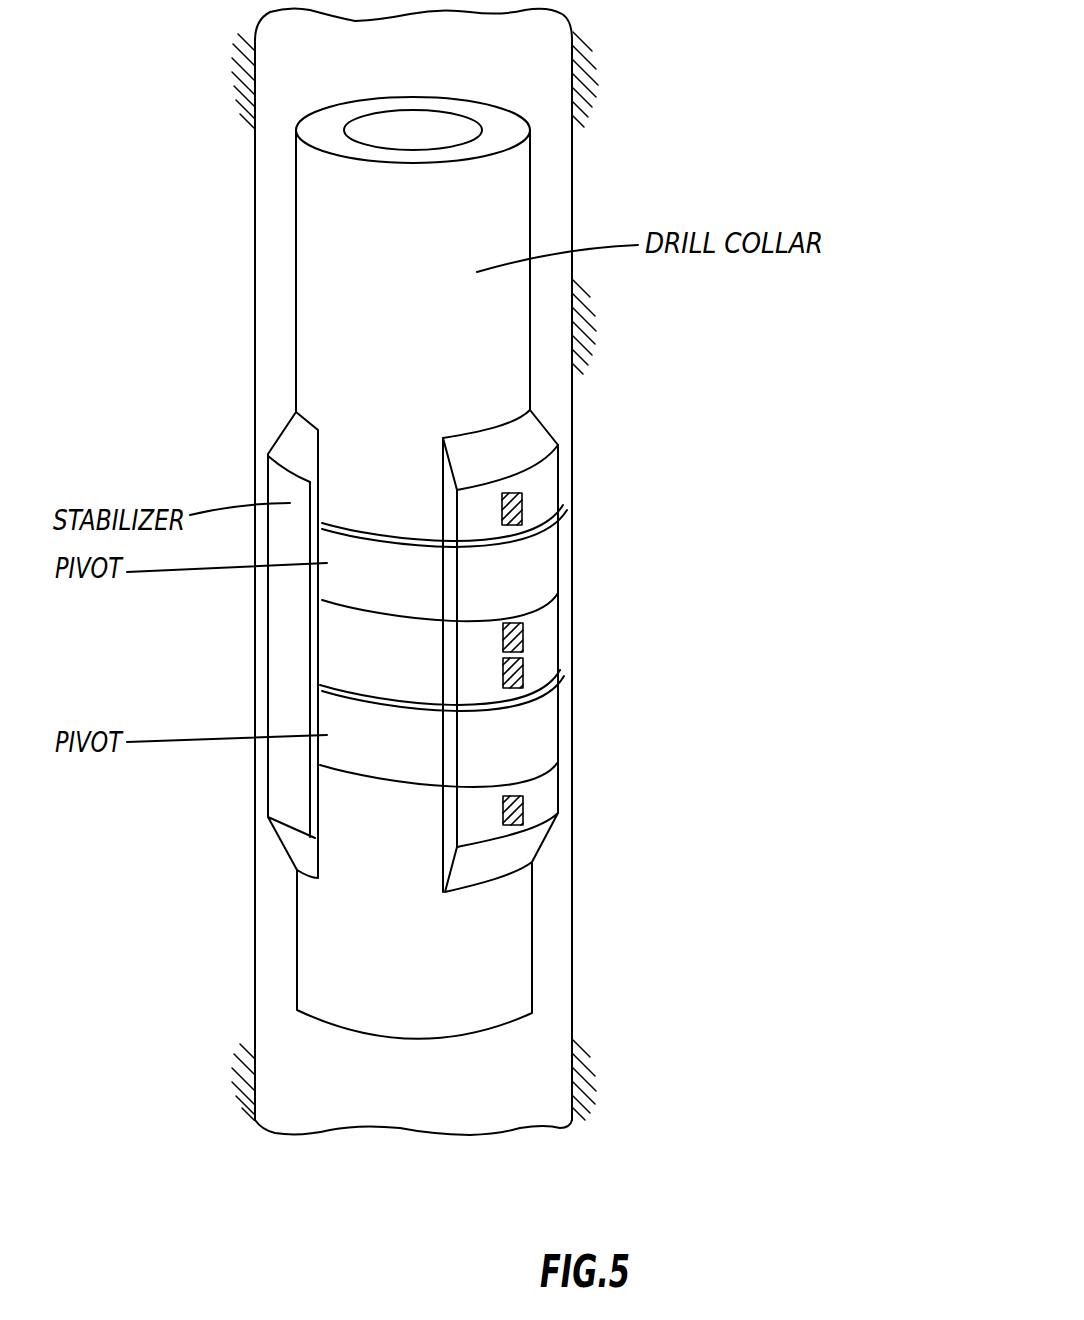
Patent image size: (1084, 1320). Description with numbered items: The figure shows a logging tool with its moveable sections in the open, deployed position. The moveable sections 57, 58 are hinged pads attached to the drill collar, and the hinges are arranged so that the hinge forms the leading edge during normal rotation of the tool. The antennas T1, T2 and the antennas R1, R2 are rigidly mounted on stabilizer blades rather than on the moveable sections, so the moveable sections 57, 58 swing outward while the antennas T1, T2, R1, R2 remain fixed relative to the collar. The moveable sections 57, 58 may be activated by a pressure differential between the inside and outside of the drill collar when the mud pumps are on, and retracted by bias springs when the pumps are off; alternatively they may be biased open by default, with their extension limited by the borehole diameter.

The moveable section 58 is at (520, 560).
The moveable section 57 is at (523, 733).
The antenna T1 is at (523, 805).
The antenna T2 is at (523, 504).
The antenna R1 is at (523, 638).
The antenna R2 is at (610, 650).